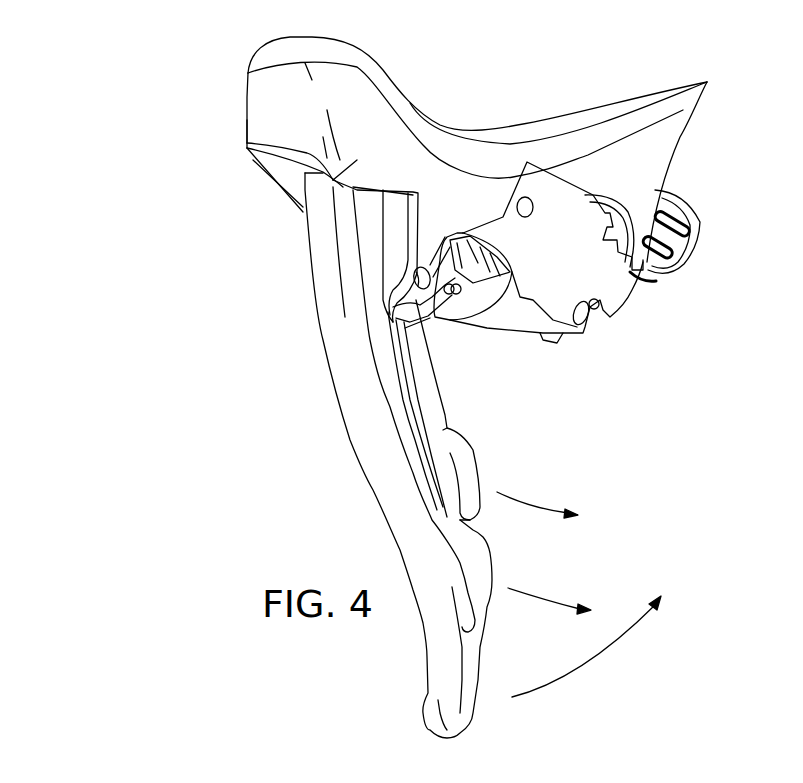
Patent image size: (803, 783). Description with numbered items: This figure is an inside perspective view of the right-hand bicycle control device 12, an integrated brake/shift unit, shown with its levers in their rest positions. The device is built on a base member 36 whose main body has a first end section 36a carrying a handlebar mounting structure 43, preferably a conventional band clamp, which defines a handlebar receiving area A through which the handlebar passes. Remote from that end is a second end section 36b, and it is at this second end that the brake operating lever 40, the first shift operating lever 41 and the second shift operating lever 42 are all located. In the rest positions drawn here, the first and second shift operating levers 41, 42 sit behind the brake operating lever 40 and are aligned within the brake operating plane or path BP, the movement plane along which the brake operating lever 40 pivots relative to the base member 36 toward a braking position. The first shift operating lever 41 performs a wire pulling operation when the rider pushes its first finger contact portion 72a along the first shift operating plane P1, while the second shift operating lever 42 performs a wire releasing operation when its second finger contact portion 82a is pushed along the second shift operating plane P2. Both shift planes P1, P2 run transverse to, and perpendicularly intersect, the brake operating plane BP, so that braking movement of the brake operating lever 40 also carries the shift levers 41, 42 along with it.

The bicycle control device 12 is at (220, 76).
The base member 36 is at (473, 120).
The first end section 36a is at (645, 152).
The second end section 36b is at (343, 185).
The handlebar mounting structure 43 is at (708, 207).
The handlebar receiving area A is at (651, 292).
The brake operating lever 40 is at (318, 379).
The first shift operating lever 41 is at (415, 399).
The second shift operating lever 42 is at (457, 415).
The first finger contact portion 72a is at (482, 597).
The second finger contact portion 82a is at (465, 473).
The first shift operating plane P1 is at (537, 600).
The second shift operating plane P2 is at (540, 510).
The brake operating plane BP is at (600, 662).